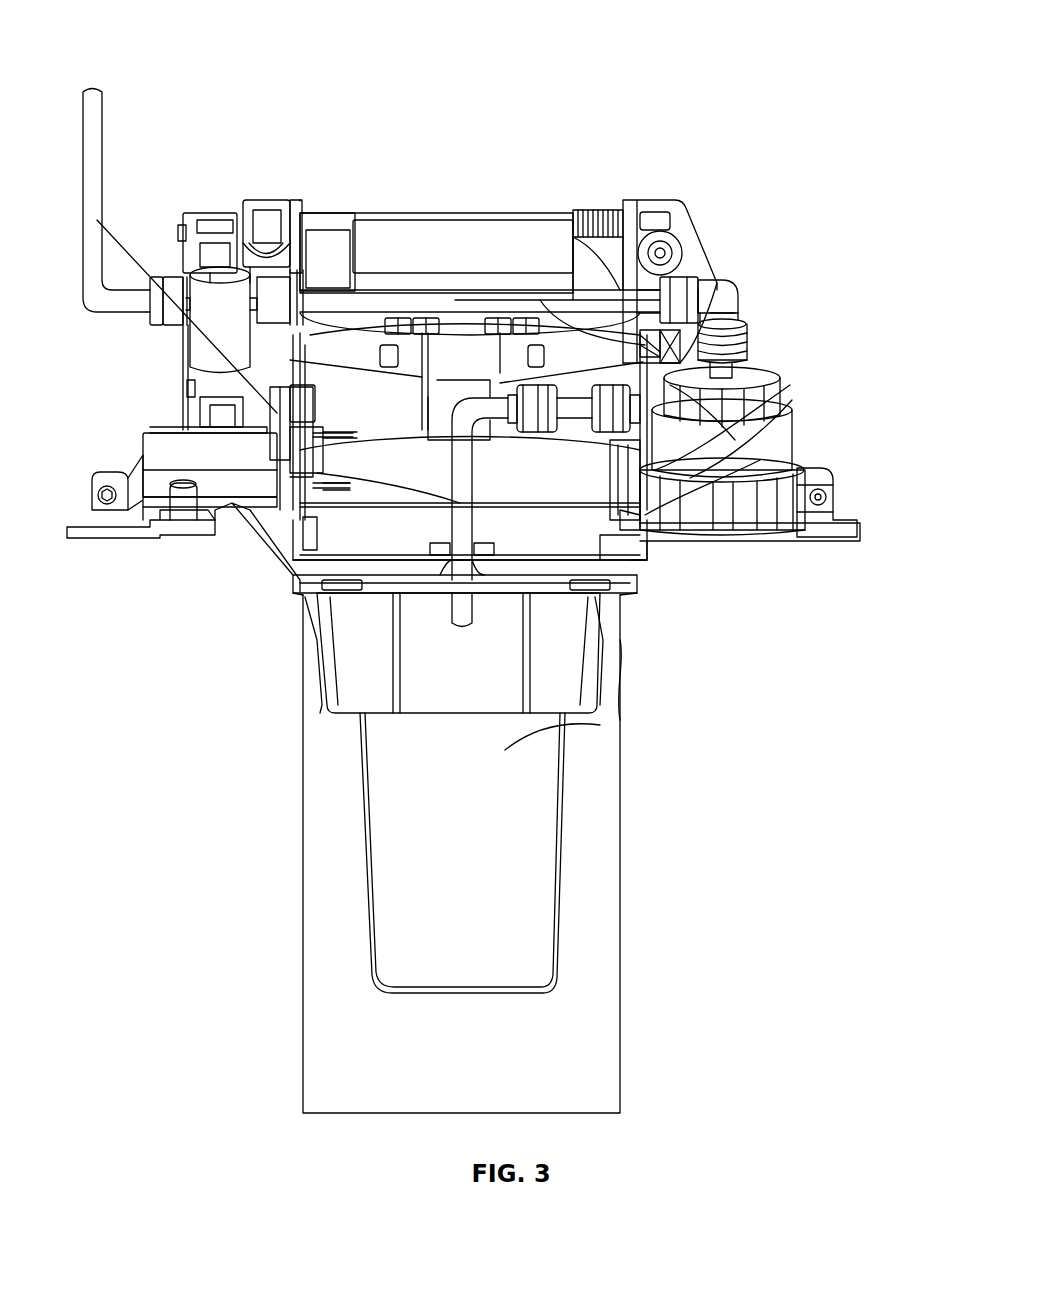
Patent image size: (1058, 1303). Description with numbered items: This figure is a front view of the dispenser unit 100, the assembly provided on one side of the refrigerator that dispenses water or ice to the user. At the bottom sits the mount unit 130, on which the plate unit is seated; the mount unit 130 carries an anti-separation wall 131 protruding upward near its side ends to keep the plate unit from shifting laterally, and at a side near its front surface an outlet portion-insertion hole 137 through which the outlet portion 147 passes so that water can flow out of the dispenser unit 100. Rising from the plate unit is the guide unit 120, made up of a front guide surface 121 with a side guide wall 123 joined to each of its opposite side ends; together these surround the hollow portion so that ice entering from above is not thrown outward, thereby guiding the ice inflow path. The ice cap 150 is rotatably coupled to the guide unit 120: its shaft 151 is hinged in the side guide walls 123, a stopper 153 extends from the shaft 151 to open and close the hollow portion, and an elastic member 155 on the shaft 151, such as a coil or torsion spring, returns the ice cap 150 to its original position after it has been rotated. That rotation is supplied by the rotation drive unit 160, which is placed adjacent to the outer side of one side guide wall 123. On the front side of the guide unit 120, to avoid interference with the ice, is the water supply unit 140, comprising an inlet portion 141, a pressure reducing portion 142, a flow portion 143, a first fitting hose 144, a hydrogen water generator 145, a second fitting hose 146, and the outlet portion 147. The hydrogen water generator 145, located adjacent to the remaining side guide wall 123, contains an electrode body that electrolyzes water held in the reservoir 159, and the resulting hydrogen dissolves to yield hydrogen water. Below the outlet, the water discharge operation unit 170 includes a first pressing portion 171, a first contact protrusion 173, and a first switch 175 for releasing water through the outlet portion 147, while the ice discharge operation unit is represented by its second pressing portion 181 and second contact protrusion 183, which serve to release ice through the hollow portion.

The dispenser unit 100 is at (757, 108).
The guide unit 120 is at (668, 130).
The front guide surface 121 is at (600, 213).
The side guide wall 123 is at (648, 338).
The mount unit 130 is at (85, 646).
The anti-separation wall 131 is at (127, 512).
The outlet portion-insertion hole 137 is at (293, 577).
The water supply unit 140 is at (870, 180).
The inlet portion 141 is at (660, 470).
The pressure reducing portion 142 is at (742, 348).
The flow portion 143 is at (728, 325).
The first fitting hose 144 is at (706, 288).
The hydrogen water generator 145 is at (752, 375).
The second fitting hose 146 is at (752, 380).
The outlet portion 147 is at (700, 497).
The ice cap 150 is at (448, 130).
The shaft 151 is at (328, 218).
The stopper 153 is at (345, 355).
The elastic member 155 is at (577, 212).
The reservoir 159 is at (800, 472).
The rotation drive unit 160 is at (263, 222).
The water discharge operation unit 170 is at (738, 578).
The first pressing portion 171 is at (590, 668).
The first contact protrusion 173 is at (600, 628).
The first switch 175 is at (612, 592).
The second pressing portion 181 is at (588, 748).
The second contact protrusion 183 is at (725, 298).